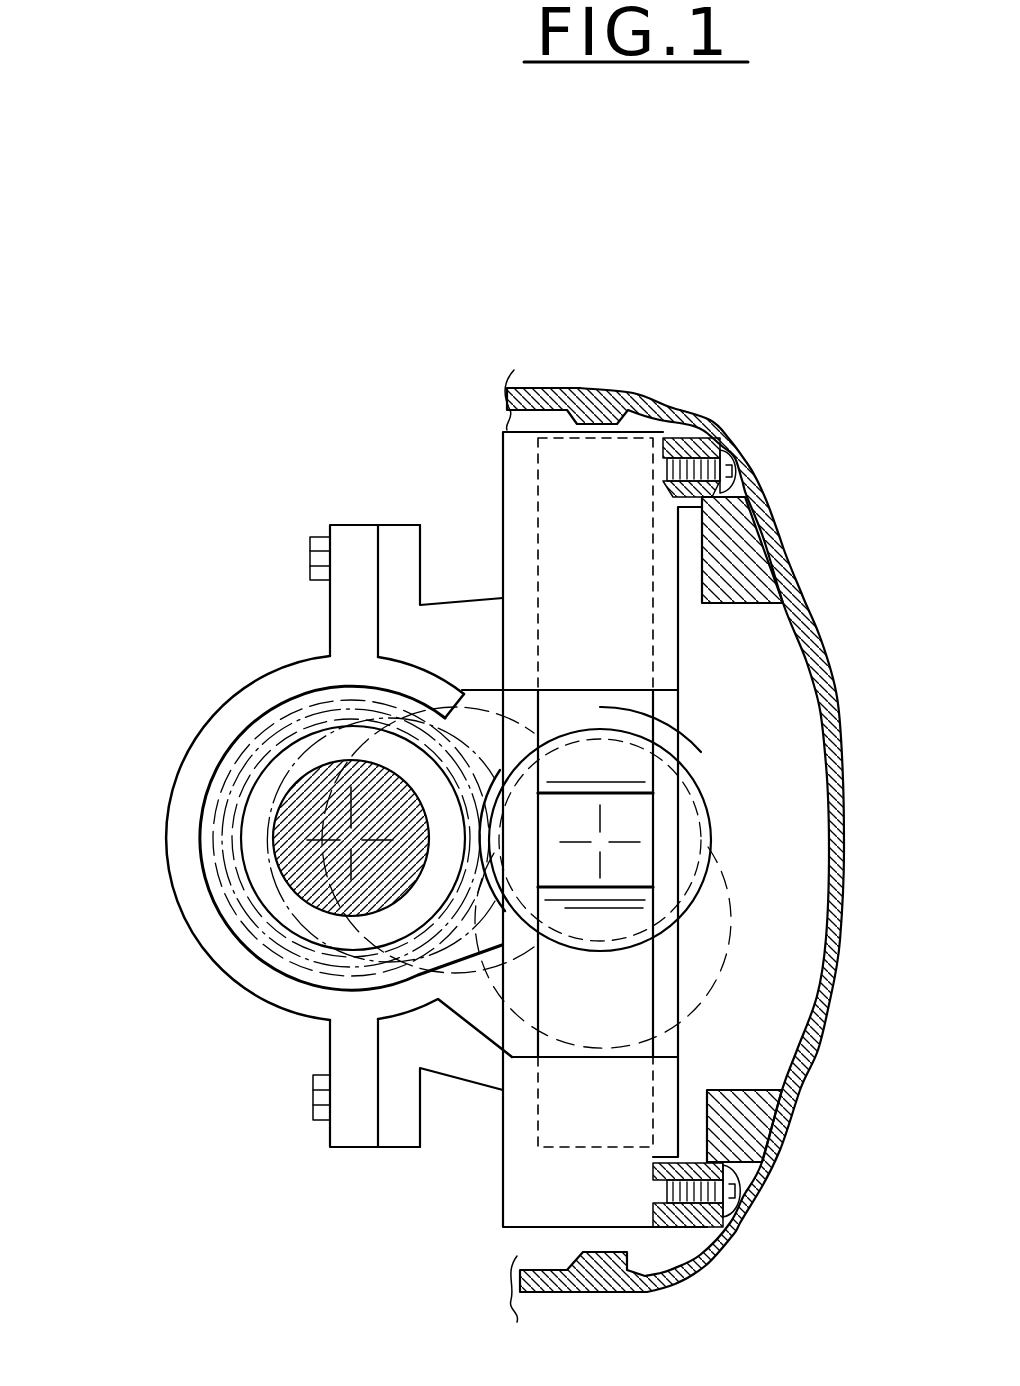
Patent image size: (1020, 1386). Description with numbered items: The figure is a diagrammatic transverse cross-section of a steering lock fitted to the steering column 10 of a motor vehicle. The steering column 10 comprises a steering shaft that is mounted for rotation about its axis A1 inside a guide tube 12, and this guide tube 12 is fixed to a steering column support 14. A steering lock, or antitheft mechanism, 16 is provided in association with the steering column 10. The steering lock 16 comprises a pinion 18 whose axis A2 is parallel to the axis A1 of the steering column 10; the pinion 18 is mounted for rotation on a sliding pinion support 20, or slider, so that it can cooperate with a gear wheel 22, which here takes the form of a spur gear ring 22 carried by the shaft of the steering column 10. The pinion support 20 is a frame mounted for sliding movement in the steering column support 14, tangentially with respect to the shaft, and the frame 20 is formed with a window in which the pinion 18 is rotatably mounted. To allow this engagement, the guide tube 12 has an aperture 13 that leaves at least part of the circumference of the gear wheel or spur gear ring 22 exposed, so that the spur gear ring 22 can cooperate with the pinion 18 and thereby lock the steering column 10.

The steering column 10 is at (290, 818).
The guide tube 12 is at (213, 735).
The aperture 13 is at (541, 690).
The steering column support 14 is at (470, 605).
The steering lock 16 is at (710, 760).
The pinion 18 is at (700, 840).
The pinion support 20 is at (672, 722).
The gear wheel 22 is at (262, 915).
The axis A1 is at (282, 868).
The axis A2 is at (601, 846).